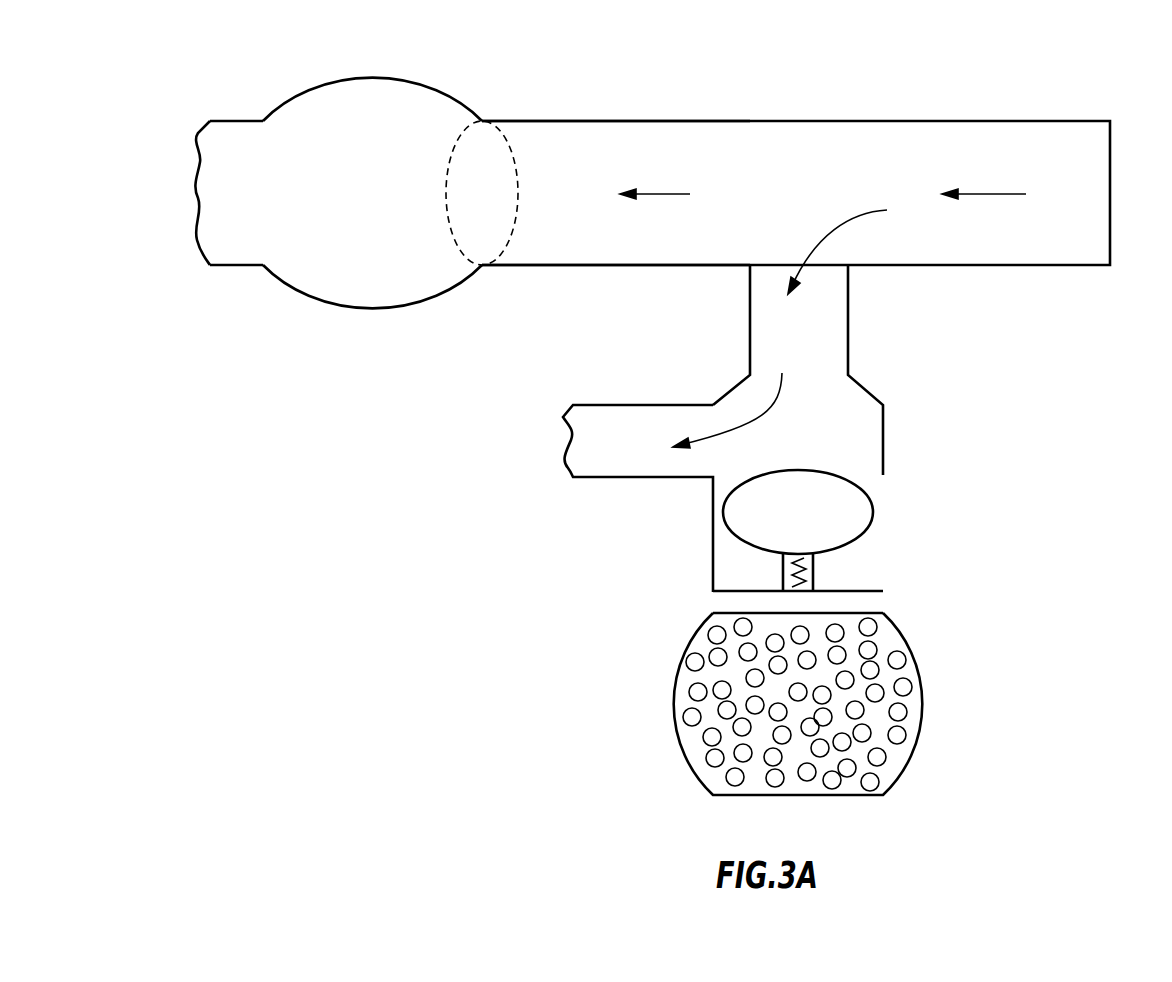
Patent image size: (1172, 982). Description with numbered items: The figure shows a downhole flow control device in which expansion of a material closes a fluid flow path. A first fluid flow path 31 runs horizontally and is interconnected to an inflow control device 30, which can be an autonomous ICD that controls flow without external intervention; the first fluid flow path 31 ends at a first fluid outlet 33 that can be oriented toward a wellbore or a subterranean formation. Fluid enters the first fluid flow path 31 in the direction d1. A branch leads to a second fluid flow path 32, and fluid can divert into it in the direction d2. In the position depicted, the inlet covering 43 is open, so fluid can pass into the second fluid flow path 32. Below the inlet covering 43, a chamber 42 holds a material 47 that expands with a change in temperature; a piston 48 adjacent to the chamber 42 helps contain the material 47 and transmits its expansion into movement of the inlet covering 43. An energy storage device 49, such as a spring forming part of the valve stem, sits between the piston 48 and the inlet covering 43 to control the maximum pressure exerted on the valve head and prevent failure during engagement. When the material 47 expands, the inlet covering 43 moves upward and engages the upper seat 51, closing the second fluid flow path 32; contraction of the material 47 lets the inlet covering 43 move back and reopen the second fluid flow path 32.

The inflow control device 30 is at (415, 83).
The first fluid flow path 31 is at (1070, 121).
The second fluid flow path 32 is at (605, 405).
The first fluid outlet 33 is at (235, 121).
The chamber 42 is at (925, 715).
The inlet covering 43 is at (798, 530).
The material 47 is at (720, 675).
The piston 48 is at (873, 602).
The energy storage device 49 is at (813, 577).
The upper seat 51 is at (732, 387).
The first flow direction d1 is at (650, 194).
The second flow direction d2 is at (833, 218).